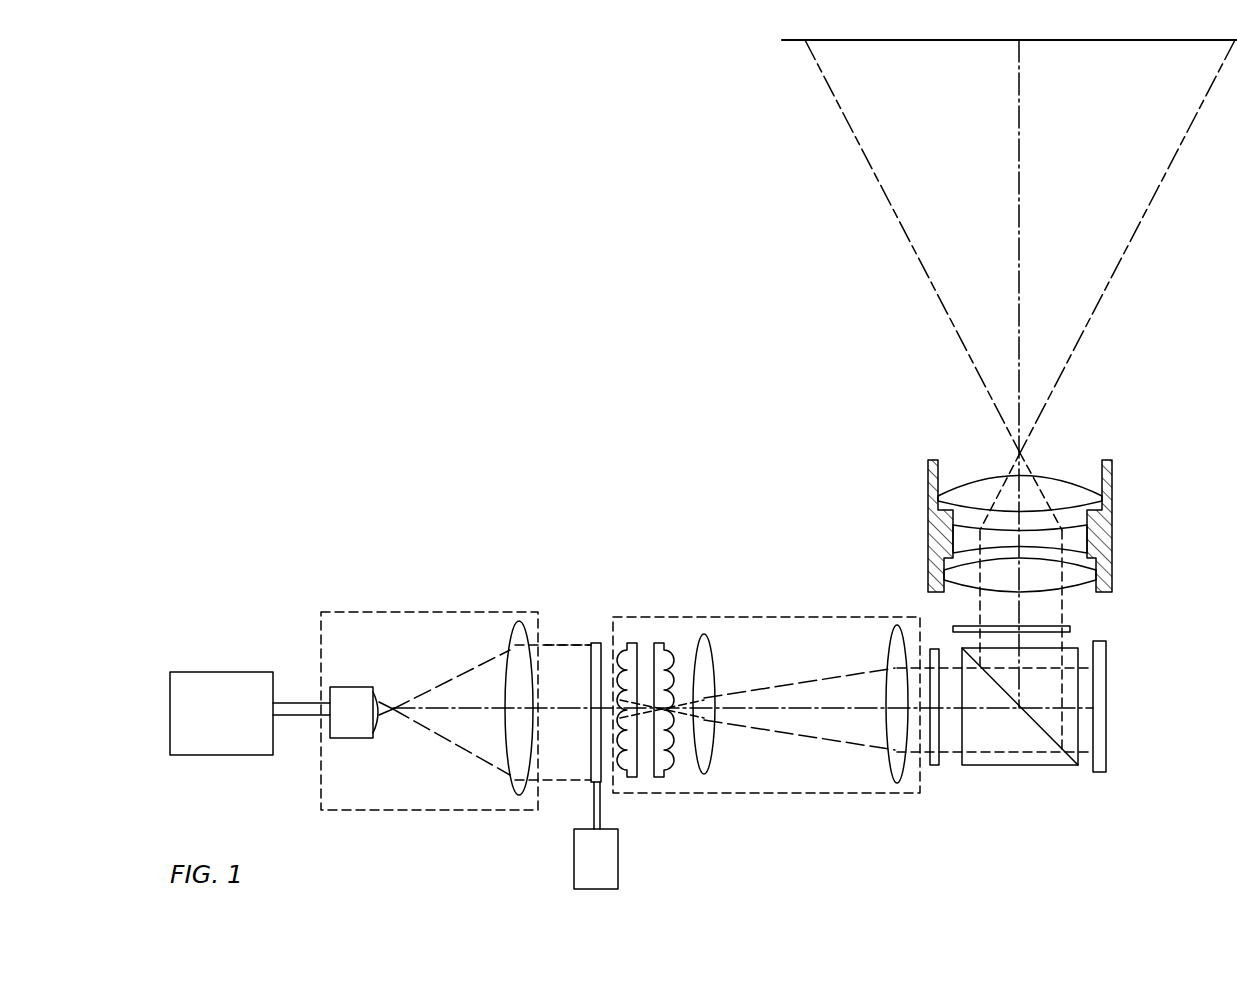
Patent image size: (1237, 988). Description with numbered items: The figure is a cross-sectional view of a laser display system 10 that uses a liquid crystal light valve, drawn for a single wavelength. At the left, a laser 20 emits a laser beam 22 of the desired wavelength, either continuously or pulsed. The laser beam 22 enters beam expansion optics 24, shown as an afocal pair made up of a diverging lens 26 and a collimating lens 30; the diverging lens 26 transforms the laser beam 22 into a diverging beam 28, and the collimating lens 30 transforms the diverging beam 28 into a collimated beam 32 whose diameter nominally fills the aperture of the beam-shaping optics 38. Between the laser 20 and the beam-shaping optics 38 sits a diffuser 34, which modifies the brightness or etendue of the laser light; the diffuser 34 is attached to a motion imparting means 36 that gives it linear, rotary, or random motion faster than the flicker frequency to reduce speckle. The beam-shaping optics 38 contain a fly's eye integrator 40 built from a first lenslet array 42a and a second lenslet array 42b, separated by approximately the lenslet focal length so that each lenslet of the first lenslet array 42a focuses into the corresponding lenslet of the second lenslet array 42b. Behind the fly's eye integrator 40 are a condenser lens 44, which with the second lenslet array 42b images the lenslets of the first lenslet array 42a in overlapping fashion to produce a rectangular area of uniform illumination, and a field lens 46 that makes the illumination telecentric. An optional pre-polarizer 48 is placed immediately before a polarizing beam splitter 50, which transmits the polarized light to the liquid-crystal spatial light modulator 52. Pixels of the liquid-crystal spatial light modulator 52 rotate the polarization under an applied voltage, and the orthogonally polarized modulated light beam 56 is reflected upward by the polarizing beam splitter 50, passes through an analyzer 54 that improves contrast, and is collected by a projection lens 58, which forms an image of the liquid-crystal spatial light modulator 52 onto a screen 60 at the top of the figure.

The laser display system 10 is at (702, 275).
The laser 20 is at (200, 674).
The laser beam 22 is at (303, 703).
The beam expansion optics 24 is at (408, 612).
The diverging lens 26 is at (374, 738).
The diverging beam 28 is at (478, 752).
The collimating lens 30 is at (515, 630).
The collimated beam 32 is at (562, 647).
The diffuser 34 is at (600, 645).
The motion imparting means 36 is at (574, 858).
The beam-shaping optics 38 is at (825, 617).
The fly's eye integrator 40 is at (681, 694).
The first lenslet array 42a is at (635, 643).
The second lenslet array 42b is at (668, 647).
The condenser lens 44 is at (708, 774).
The field lens 46 is at (897, 780).
The pre-polarizer 48 is at (935, 765).
The polarizing beam splitter 50 is at (1005, 765).
The liquid-crystal spatial light modulator 52 is at (1100, 772).
The analyzer 54 is at (953, 629).
The modulated light beam 56 is at (1048, 610).
The projection lens 58 is at (930, 525).
The screen 60 is at (958, 40).